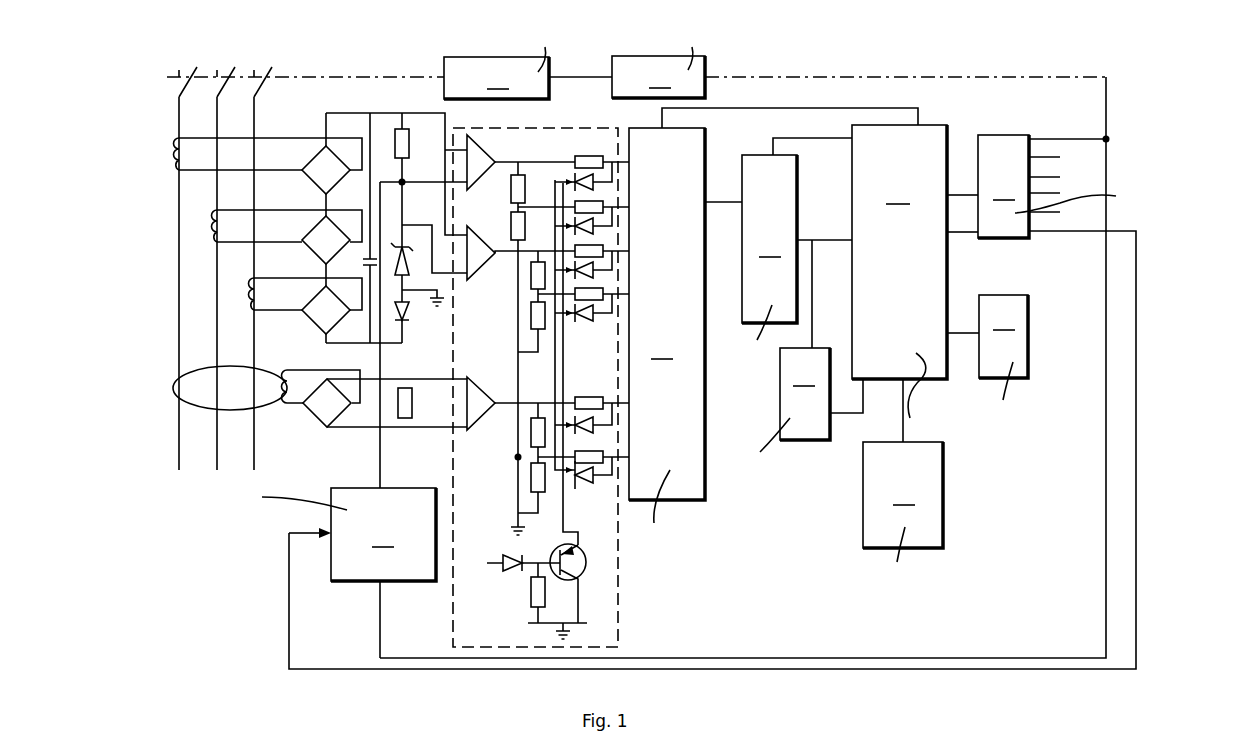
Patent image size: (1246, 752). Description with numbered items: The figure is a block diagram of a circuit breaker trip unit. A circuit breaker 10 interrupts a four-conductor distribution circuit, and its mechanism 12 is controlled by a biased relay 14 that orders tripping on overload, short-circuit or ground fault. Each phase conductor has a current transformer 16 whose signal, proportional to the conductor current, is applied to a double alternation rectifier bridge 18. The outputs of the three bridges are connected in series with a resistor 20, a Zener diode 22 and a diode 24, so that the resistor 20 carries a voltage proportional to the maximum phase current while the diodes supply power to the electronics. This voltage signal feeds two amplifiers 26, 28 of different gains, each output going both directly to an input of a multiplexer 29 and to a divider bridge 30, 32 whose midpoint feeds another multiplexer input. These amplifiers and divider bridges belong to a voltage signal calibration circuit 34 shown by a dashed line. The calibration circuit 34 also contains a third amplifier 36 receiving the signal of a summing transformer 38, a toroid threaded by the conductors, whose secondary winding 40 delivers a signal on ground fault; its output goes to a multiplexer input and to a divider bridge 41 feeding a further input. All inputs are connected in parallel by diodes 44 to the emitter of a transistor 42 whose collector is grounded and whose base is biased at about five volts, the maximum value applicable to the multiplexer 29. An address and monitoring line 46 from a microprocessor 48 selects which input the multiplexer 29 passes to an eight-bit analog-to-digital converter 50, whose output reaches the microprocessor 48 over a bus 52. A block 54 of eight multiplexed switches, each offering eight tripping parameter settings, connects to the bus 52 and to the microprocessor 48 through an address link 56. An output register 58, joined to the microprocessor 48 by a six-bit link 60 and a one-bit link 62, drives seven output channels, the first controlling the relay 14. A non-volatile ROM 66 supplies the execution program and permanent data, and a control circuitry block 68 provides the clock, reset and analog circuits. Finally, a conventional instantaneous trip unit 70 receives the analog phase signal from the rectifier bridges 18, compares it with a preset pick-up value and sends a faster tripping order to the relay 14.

The circuit breaker 10 is at (281, 60).
The mechanism 12 is at (495, 67).
The biased relay 14 is at (658, 66).
The current transformer 16 is at (195, 157).
The double alternation rectifier bridge 18 is at (323, 228).
The resistor 20 is at (409, 143).
The Zener diode 22 is at (406, 260).
The diode 24 is at (407, 320).
The amplifier 26 is at (480, 141).
The amplifier 28 is at (472, 231).
The multiplexer 29 is at (677, 333).
The divider bridge 30 is at (510, 207).
The divider bridge 32 is at (528, 294).
The voltage signal calibration circuit 34 is at (540, 128).
The third amplifier 36 is at (475, 382).
The summing transformer 38 is at (233, 390).
The secondary winding 40 is at (294, 344).
The divider bridge 41 is at (525, 457).
The transistor 42 is at (582, 562).
The diodes 44 is at (556, 182).
The address and monitoring line 46 is at (790, 107).
The microprocessor 48 is at (959, 278).
The analog-to-digital converter 50 is at (778, 250).
The bus 52 is at (824, 283).
The block of multiplexed switches 54 is at (789, 409).
The address link 56 is at (846, 397).
The output register 58 is at (746, 392).
The 6-bit link 60 is at (962, 183).
The 1-bit link 62 is at (962, 222).
The non-volatile ROM 66 is at (997, 354).
The control circuitry block 68 is at (926, 490).
The instantaneous trip unit 70 is at (277, 567).